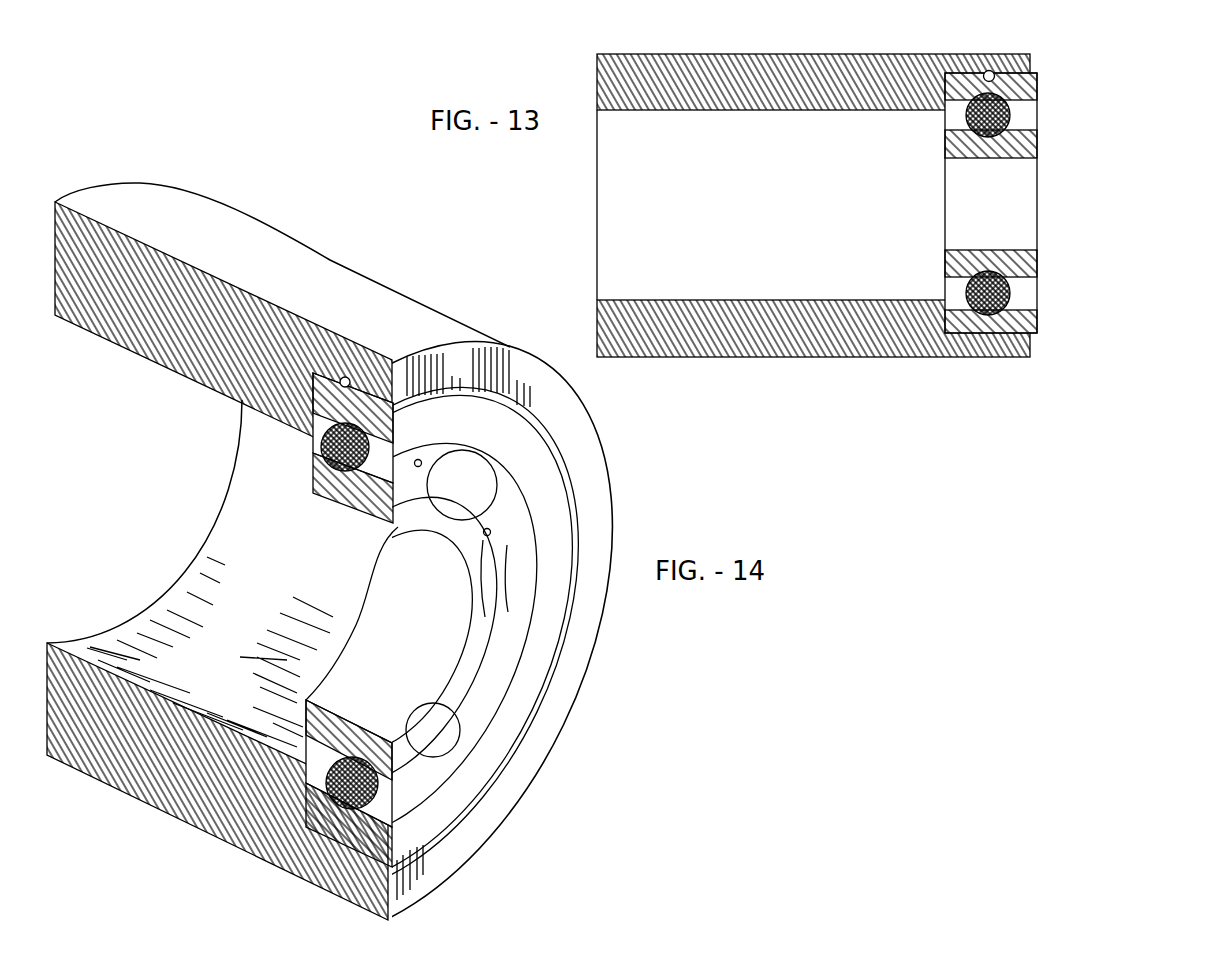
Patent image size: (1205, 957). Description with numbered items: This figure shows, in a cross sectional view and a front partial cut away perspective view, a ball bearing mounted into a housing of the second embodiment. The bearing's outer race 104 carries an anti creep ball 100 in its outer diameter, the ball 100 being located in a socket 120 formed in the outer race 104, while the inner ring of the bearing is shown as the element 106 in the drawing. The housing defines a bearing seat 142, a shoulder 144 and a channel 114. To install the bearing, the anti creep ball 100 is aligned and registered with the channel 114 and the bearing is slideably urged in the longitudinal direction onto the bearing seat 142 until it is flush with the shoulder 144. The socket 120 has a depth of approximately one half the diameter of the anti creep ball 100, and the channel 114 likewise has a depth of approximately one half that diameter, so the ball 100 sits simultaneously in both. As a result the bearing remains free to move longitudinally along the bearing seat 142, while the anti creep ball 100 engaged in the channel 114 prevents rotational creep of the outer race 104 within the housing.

The anti creep ball 100 is at (971, 237).
The outer race 104 is at (1040, 103).
The inner race 106 is at (1040, 155).
The channel 114 is at (995, 77).
The socket 120 is at (943, 75).
The bearing seat 142 is at (990, 337).
The shoulder 144 is at (945, 313).